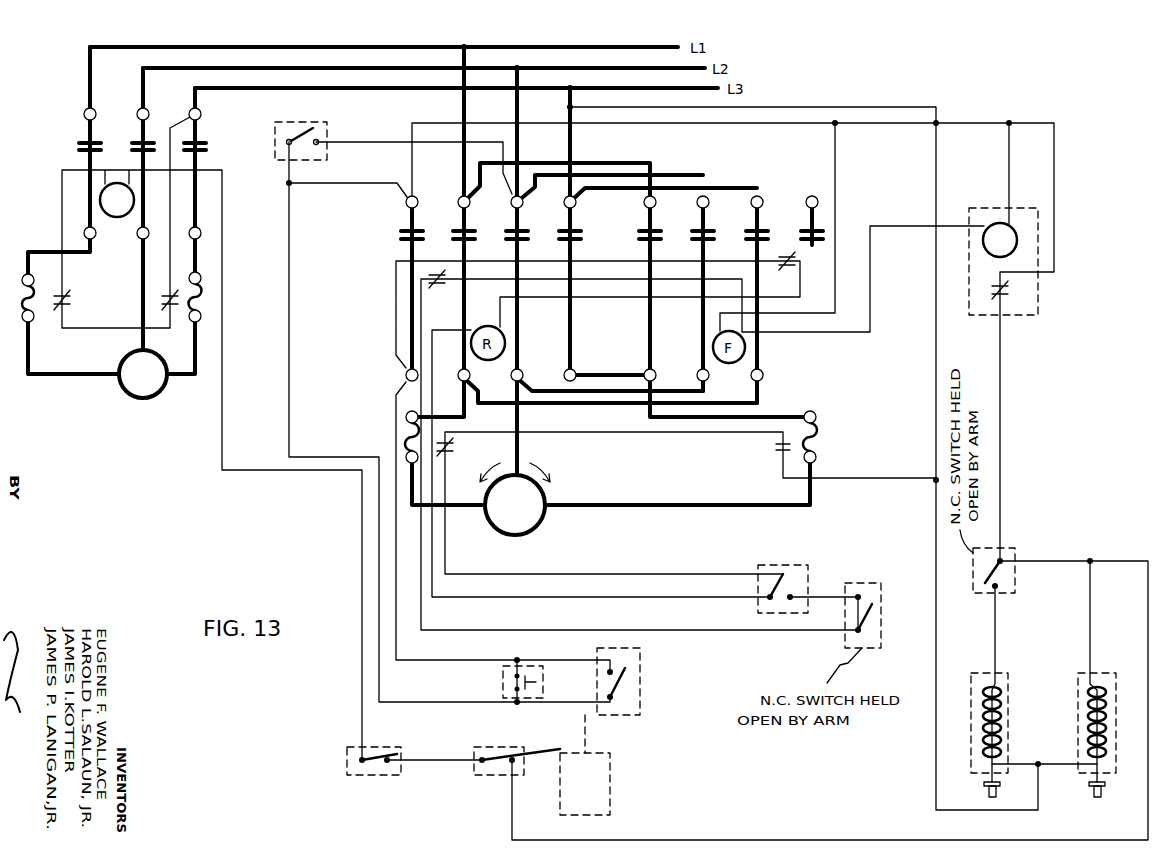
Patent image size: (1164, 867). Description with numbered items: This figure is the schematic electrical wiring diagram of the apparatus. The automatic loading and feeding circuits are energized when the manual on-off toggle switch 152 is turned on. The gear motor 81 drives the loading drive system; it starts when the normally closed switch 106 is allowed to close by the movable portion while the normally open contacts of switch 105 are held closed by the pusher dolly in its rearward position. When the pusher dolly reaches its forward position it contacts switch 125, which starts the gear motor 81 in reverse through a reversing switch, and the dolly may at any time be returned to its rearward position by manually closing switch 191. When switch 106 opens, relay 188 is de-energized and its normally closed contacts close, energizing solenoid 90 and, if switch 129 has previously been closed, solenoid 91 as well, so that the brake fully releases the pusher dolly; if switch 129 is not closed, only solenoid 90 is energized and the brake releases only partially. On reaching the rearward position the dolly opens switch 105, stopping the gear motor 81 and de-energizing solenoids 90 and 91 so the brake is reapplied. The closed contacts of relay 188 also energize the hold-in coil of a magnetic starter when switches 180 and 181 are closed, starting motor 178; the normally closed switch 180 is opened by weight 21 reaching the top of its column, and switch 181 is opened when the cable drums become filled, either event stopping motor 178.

The weight 21 is at (560, 800).
The gear motor 81 is at (514, 494).
The solenoid 90 is at (1078, 710).
The solenoid 91 is at (1010, 727).
The switch 105 is at (795, 557).
The normally closed electrical switch 106 is at (870, 578).
The switch 125 is at (640, 722).
The switch 129 is at (1012, 549).
The toggle switch 152 is at (304, 124).
The motor 178 is at (143, 374).
The normally closed switch 180 is at (475, 748).
The switch 181 is at (405, 744).
The relay 188 is at (1013, 318).
The switch 191 is at (503, 684).